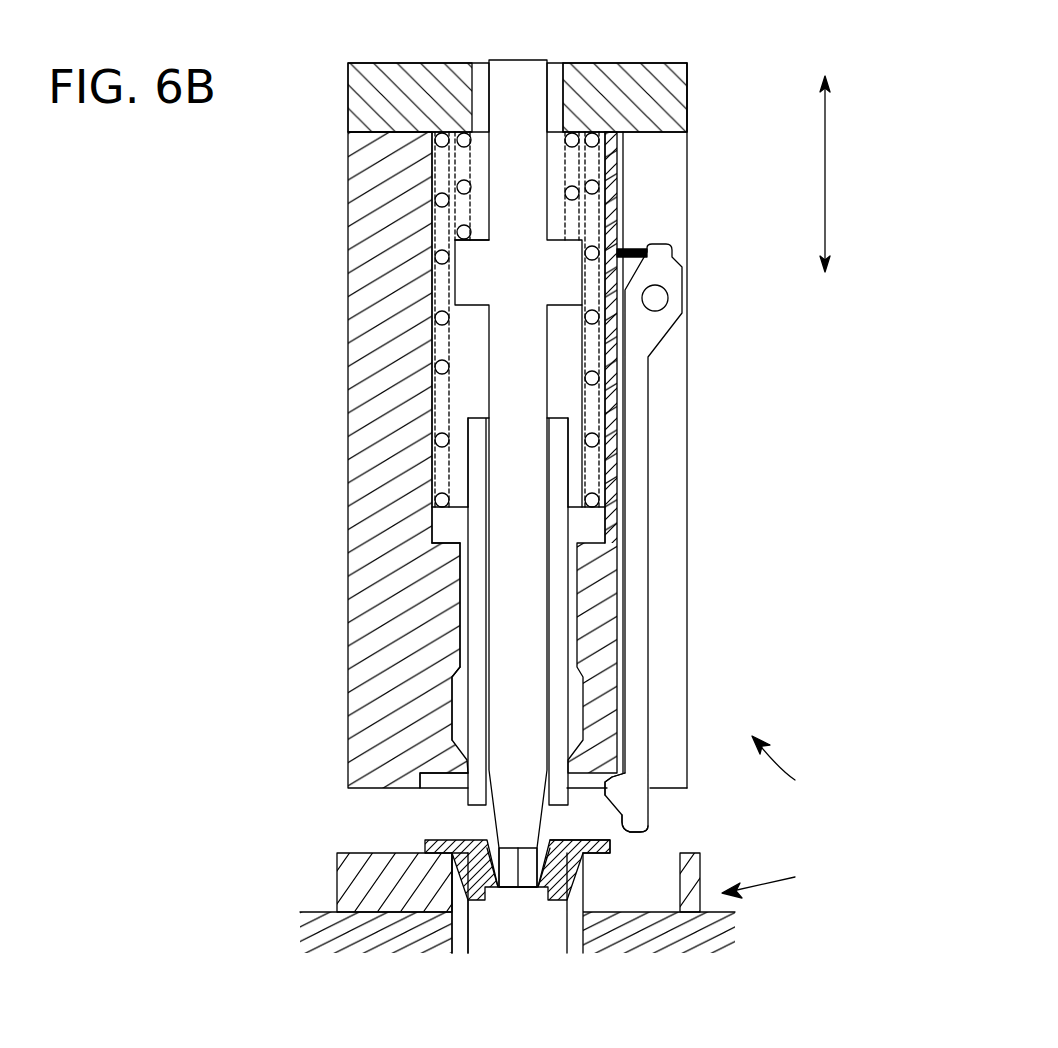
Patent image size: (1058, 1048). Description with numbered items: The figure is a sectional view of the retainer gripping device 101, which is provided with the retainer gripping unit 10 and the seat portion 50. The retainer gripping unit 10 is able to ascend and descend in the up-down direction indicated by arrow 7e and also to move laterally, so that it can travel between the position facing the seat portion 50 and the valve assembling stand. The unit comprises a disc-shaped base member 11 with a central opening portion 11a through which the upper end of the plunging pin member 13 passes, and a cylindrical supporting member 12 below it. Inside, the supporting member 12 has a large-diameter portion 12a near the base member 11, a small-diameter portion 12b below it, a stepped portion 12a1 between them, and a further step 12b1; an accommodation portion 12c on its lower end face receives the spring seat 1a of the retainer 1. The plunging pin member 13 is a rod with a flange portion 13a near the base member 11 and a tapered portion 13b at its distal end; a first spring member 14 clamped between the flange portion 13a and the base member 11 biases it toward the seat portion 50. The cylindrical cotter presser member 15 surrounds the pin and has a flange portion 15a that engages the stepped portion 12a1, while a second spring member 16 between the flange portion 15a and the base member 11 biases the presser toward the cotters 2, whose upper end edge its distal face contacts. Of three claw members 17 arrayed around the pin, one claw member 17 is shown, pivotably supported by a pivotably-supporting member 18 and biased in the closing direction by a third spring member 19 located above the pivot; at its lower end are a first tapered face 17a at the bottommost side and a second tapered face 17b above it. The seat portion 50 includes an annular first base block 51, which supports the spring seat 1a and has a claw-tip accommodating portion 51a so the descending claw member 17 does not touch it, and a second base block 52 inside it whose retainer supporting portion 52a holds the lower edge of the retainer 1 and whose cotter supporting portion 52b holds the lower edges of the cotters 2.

The retainer 1 is at (592, 830).
The spring seat 1a is at (612, 851).
The cotters 2 is at (558, 842).
The arrow 7e is at (840, 148).
The retainer gripping unit 10 is at (784, 768).
The base member 11 is at (687, 63).
The opening portion 11a is at (563, 82).
The supporting member 12 is at (347, 270).
The large-diameter portion 12a is at (435, 397).
The stepped portion 12a1 is at (445, 543).
The small-diameter portion 12b is at (470, 616).
The step 12b1 is at (470, 654).
The accommodation portion 12c is at (430, 777).
The plunging pin member 13 is at (488, 158).
The flange portion 13a is at (453, 240).
The tapered portion 13b is at (493, 820).
The first spring member 14 is at (580, 158).
The cotter presser member 15 is at (475, 568).
The flange portion 15a is at (432, 500).
The second spring member 16 is at (436, 368).
The claw member 17 is at (648, 402).
The first tapered face 17a is at (633, 833).
The second tapered face 17b is at (608, 765).
The pivotably-supporting member 18 is at (661, 295).
The third spring member 19 is at (630, 245).
The seat portion 50 is at (771, 877).
The first base block 51 is at (372, 868).
The claw-tip accommodating portion 51a is at (683, 853).
The second base block 52 is at (548, 933).
The retainer supporting portion 52a is at (457, 893).
The cotter supporting portion 52b is at (517, 887).
The retainer gripping device 101 is at (868, 953).